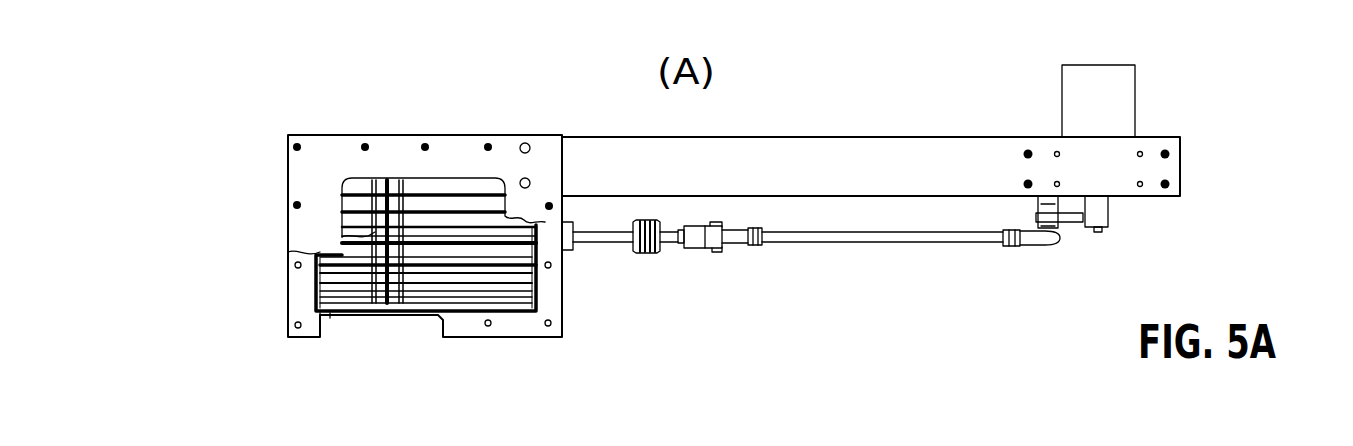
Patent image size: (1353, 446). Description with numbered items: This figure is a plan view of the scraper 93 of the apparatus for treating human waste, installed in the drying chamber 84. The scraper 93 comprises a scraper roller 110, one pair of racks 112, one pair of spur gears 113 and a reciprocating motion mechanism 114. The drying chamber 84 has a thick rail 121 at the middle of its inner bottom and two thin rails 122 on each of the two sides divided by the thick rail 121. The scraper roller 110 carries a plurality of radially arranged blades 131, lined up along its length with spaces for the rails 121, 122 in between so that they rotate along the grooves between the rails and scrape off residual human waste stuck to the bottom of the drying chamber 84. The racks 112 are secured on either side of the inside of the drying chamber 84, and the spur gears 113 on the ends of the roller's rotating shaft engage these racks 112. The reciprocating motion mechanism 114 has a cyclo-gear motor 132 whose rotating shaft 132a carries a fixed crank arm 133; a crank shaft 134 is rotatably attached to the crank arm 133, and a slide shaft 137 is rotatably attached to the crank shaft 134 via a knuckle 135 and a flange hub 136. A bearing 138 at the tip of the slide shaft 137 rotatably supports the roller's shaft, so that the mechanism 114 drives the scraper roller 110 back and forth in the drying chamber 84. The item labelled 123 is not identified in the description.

The drying chamber 84 is at (555, 296).
The scraper 93 is at (1174, 60).
The scraper roller 110 is at (375, 318).
The rack 112 is at (510, 313).
The spur gear 113 is at (380, 315).
The reciprocating motion mechanism 114 is at (870, 243).
The thick rail 121 is at (340, 247).
The thin rail 122 is at (328, 288).
The tube guide 123 is at (443, 270).
The blade 131 is at (404, 187).
The cyclo-gear motor 132 is at (1135, 112).
The rotating shaft of the cyclo-gear motor 132a is at (1098, 233).
The crank arm 133 is at (1073, 228).
The crank shaft 134 is at (967, 240).
The knuckle 135 is at (702, 250).
The flange hub 136 is at (662, 250).
The slide shaft 137 is at (605, 225).
The bearing 138 is at (345, 245).